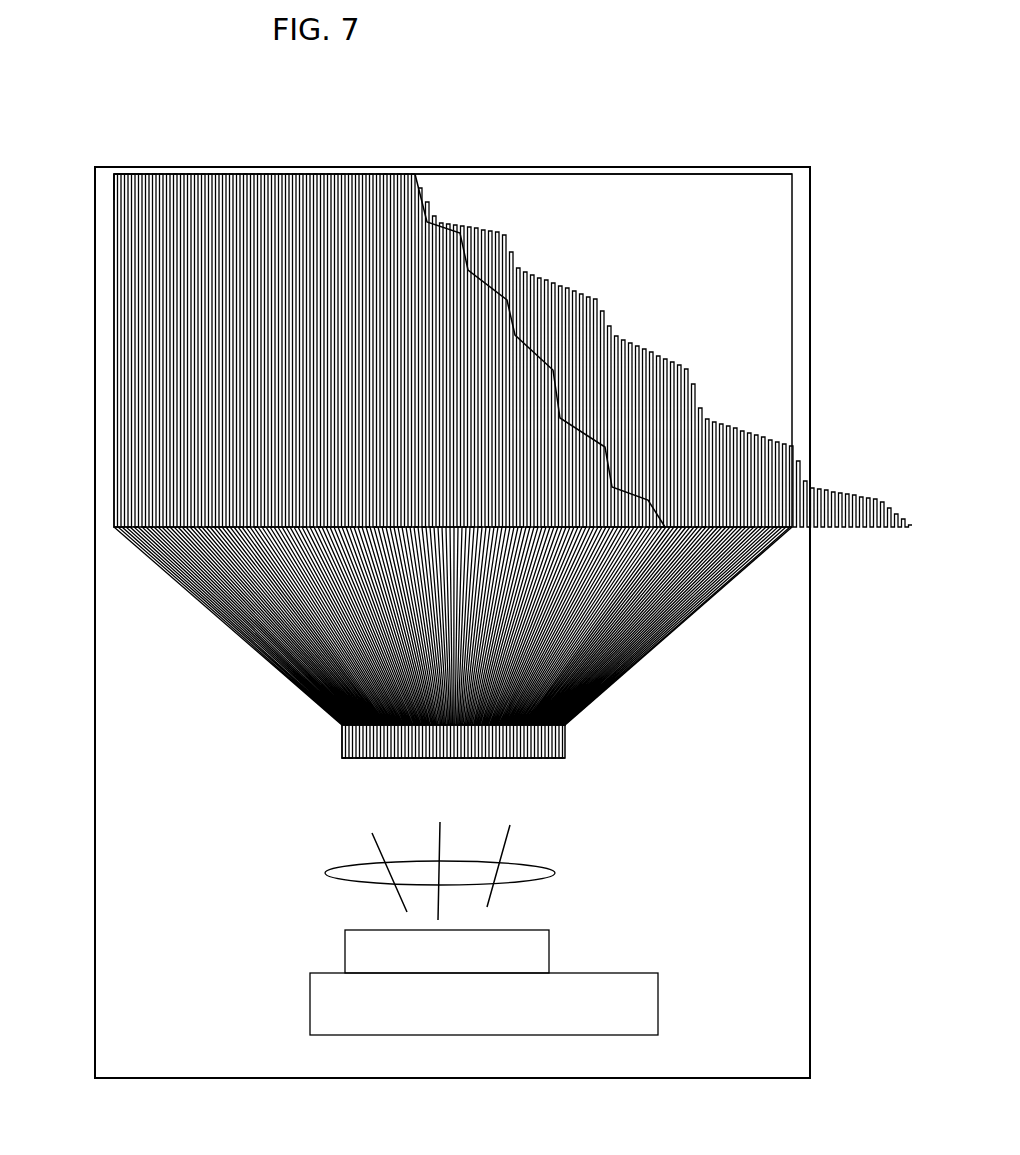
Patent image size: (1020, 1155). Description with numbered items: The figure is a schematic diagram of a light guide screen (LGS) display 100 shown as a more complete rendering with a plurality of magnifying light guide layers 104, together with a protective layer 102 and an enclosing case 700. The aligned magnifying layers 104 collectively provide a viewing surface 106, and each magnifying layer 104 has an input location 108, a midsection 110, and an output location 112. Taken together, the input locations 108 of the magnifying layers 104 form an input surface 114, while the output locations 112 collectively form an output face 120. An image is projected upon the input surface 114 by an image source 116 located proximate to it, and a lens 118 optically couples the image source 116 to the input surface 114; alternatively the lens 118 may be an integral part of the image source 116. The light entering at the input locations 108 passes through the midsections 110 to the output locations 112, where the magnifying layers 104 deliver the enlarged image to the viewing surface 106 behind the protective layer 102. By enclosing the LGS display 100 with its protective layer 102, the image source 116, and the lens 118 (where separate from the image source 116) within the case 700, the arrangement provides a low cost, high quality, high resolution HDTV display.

The light guide screen display 100 is at (688, 112).
The protective layer 102 is at (773, 468).
The magnifying light guide layer 104 is at (113, 158).
The viewing surface 106 is at (712, 200).
The input location 108 is at (340, 760).
The midsection 110 is at (787, 543).
The output location 112 is at (113, 175).
The input surface 114 is at (565, 760).
The image source 116 is at (522, 952).
The lens 118 is at (555, 873).
The output face 120 is at (790, 160).
The case 700 is at (810, 750).